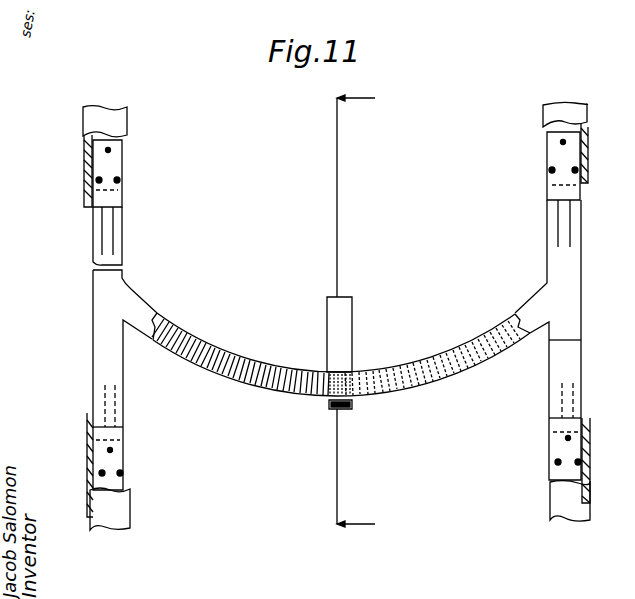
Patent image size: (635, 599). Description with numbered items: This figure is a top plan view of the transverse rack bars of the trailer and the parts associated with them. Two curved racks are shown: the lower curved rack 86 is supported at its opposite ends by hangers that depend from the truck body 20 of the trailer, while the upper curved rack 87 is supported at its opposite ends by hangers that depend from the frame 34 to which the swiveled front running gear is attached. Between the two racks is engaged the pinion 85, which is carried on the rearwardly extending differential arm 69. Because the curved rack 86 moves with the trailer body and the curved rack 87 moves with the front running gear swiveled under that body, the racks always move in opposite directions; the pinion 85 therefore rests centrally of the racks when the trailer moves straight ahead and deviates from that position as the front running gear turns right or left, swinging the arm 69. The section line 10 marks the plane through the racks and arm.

The section line 10 is at (368, 314).
The truck body 20 is at (128, 510).
The frame 34 is at (127, 120).
The differential arm 69 is at (353, 330).
The pinion 85 is at (325, 400).
The lower curved rack 86 is at (265, 385).
The upper curved rack 87 is at (435, 380).